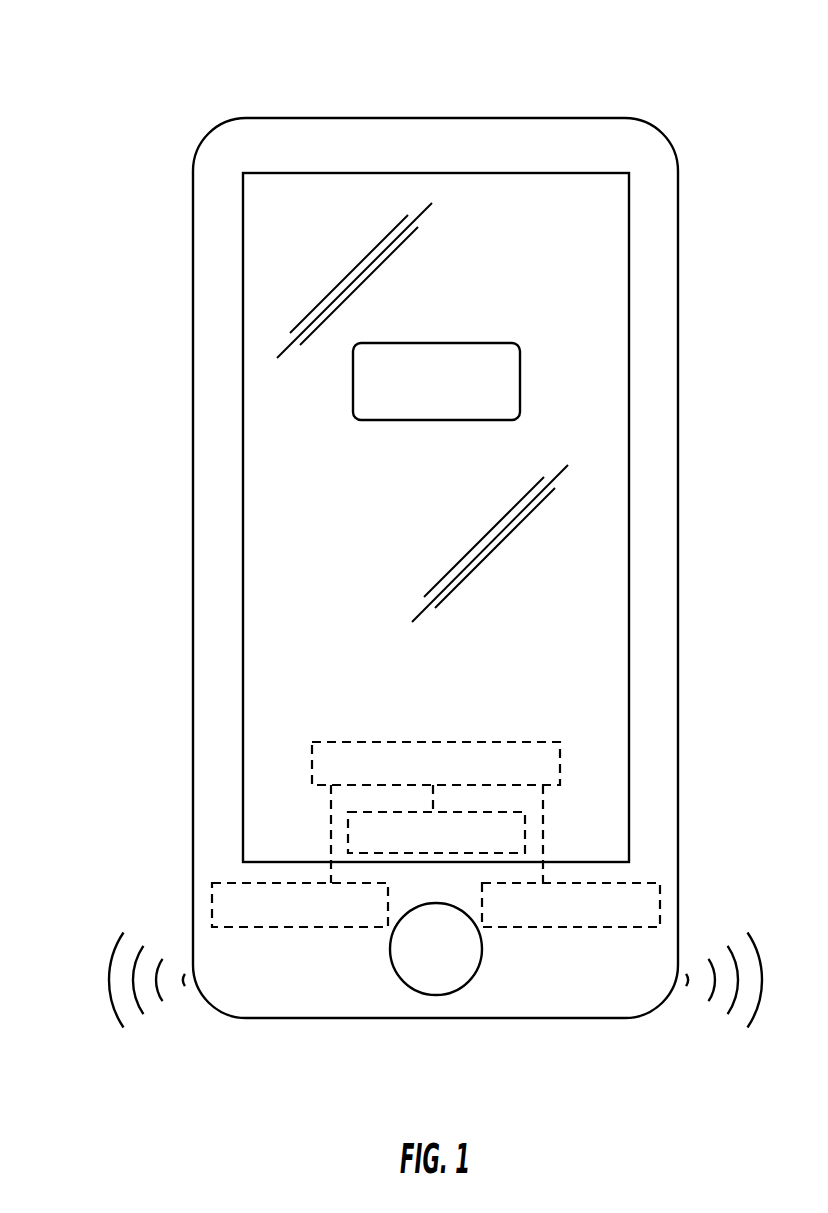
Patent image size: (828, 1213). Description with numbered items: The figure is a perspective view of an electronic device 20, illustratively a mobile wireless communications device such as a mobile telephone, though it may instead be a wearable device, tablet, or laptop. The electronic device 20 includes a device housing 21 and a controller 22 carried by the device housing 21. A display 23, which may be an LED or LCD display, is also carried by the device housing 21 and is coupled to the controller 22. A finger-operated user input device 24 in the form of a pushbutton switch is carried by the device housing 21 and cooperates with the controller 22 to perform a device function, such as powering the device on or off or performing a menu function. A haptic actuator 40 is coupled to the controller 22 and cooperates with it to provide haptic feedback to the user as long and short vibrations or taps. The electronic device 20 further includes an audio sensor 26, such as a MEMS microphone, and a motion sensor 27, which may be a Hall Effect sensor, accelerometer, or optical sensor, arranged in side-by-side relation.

The electronic device 20 is at (145, 63).
The device housing 21 is at (193, 258).
The controller 22 is at (433, 742).
The display 23 is at (243, 440).
The finger-operated user input device 24 is at (436, 995).
The audio sensor 26 is at (212, 883).
The motion sensor 27 is at (660, 883).
The haptic actuator 40 is at (348, 842).